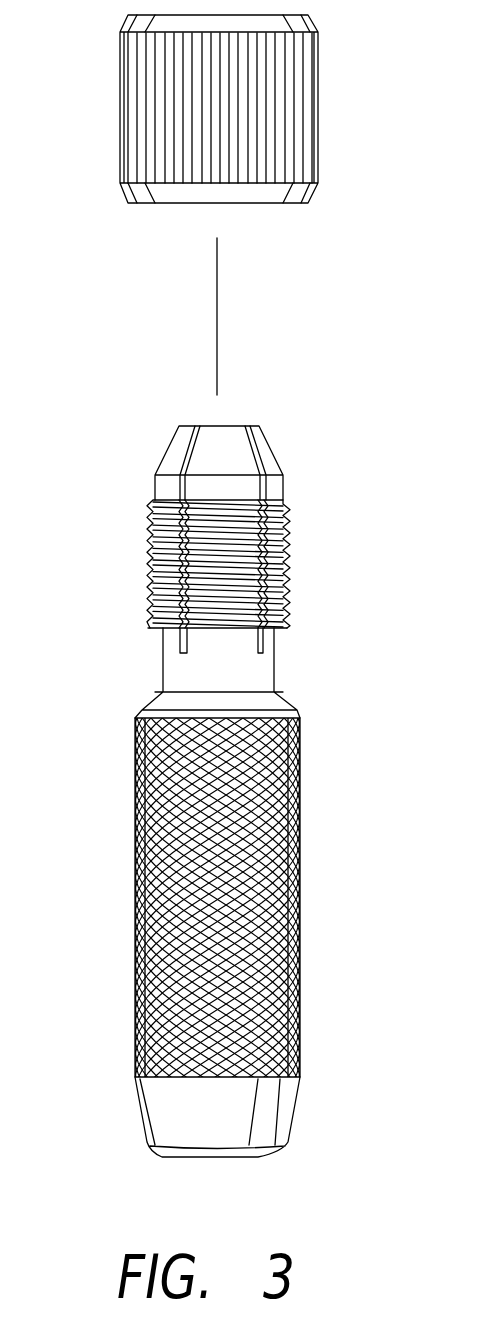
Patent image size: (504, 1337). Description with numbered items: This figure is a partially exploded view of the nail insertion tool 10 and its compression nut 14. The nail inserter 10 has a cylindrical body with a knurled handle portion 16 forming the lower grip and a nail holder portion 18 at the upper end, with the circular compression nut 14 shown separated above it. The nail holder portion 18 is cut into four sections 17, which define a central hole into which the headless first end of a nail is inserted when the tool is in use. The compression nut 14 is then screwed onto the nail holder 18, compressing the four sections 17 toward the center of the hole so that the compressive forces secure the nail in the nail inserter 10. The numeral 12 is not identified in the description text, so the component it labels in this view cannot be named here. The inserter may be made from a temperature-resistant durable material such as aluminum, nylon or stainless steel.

The nail insertion tool 10 is at (112, 517).
The knurled handle body 12 is at (294, 894).
The compression nut 14 is at (320, 115).
The knurled handle portion 16 is at (300, 1006).
The sections 17 is at (170, 443).
The nail holder portion 18 is at (290, 560).